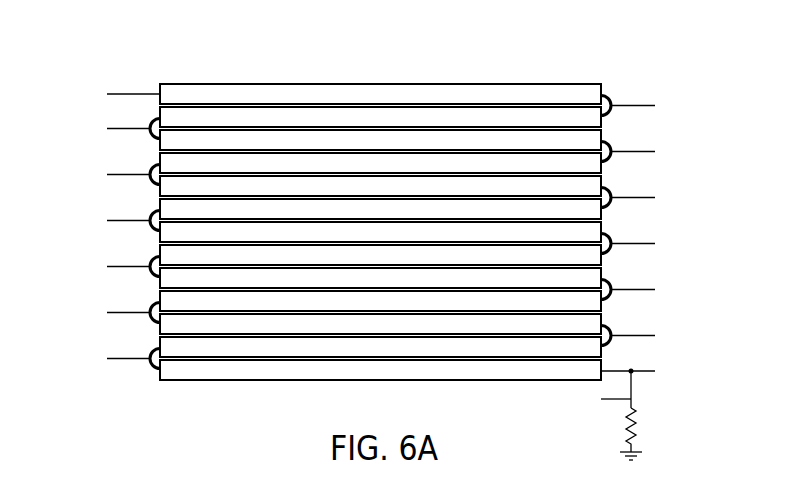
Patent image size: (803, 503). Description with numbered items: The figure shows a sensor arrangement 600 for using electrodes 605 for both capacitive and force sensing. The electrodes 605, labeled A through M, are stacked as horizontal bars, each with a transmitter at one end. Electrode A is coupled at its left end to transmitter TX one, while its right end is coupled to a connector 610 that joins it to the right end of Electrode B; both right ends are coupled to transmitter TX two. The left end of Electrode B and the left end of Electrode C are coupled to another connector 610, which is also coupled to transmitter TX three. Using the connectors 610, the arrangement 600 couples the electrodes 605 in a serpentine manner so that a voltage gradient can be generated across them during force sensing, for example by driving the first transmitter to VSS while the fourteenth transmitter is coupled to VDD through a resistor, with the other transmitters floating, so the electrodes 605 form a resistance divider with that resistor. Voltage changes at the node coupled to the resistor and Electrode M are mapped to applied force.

The sensor arrangement 600 is at (127, 66).
The electrodes 605 is at (561, 84).
The connector 610 is at (608, 92).